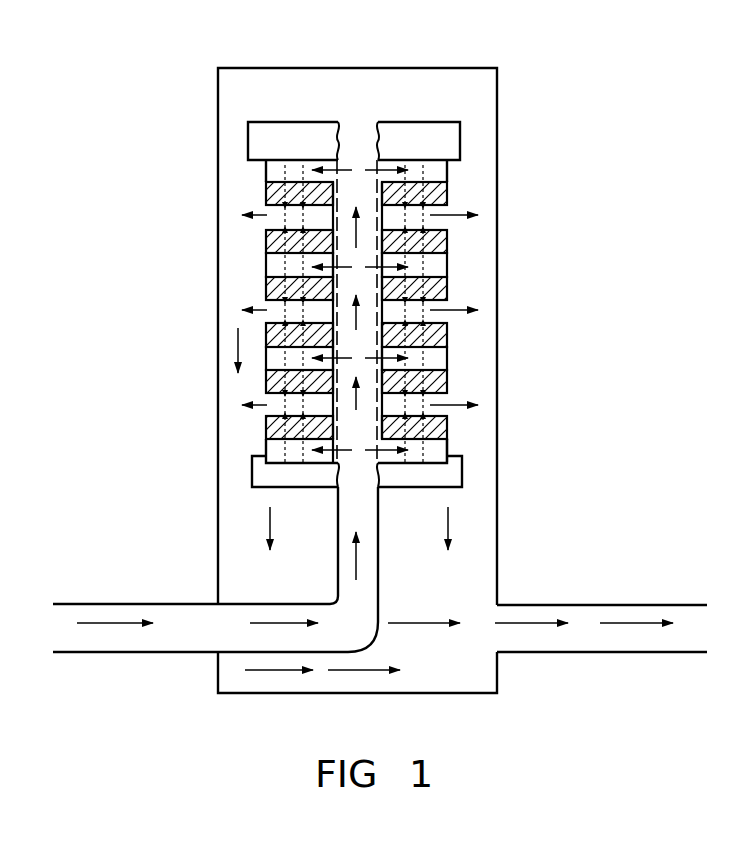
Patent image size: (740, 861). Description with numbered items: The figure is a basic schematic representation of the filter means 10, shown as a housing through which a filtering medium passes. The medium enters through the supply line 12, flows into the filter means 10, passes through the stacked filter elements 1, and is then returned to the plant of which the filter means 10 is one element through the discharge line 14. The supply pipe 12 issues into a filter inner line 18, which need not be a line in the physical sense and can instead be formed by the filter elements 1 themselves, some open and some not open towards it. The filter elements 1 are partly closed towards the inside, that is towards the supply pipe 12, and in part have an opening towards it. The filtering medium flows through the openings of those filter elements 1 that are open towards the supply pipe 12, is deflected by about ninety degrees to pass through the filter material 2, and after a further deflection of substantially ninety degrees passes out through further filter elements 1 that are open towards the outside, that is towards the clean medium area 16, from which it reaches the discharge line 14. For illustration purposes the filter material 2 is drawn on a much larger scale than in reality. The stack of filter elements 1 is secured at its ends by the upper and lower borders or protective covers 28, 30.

The filter element 1 is at (268, 206).
The filter material 2 is at (447, 243).
The filter means 10 is at (519, 345).
The supply line 12 is at (219, 578).
The discharge line 14 is at (548, 628).
The clean medium area 16 is at (474, 384).
The filter inner line 18 is at (362, 138).
The upper protective cover 28 is at (412, 135).
The lower protective cover 30 is at (448, 480).